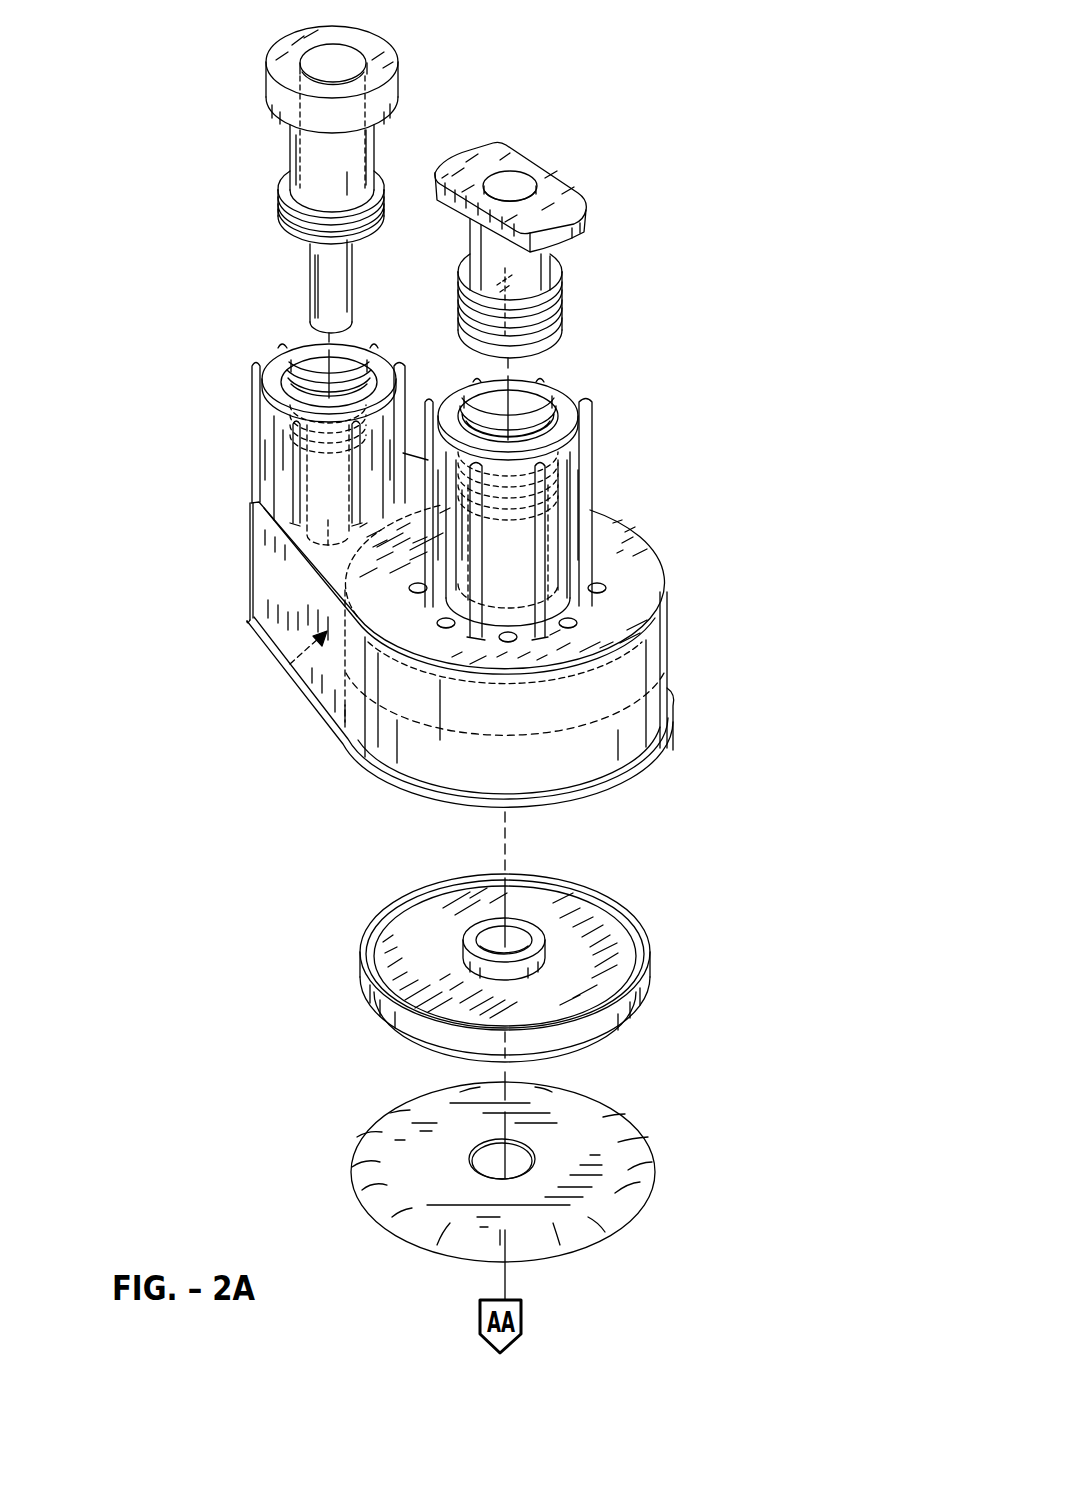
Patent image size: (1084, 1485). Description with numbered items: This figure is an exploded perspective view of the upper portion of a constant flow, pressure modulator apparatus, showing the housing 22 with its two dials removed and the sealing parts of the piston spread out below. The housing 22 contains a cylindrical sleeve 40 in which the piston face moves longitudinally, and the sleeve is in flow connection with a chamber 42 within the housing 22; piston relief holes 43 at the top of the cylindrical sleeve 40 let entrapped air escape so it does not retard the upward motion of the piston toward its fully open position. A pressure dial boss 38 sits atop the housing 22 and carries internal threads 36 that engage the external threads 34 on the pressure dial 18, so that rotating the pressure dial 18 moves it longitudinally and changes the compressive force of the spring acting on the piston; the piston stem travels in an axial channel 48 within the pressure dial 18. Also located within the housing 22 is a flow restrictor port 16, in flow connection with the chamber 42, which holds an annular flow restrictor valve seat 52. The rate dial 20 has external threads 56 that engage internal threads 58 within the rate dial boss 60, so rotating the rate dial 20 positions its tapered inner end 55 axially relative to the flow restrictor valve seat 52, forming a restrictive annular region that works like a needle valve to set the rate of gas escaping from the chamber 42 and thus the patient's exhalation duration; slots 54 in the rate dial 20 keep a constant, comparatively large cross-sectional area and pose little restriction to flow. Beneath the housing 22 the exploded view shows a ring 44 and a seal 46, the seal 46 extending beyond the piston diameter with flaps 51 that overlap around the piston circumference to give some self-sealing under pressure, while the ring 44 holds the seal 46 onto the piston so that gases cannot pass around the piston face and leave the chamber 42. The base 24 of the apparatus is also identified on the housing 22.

The flow restrictor port 16 is at (312, 572).
The pressure dial 18 is at (567, 192).
The rate dial 20 is at (276, 50).
The housing 22 is at (603, 767).
The base 24 is at (343, 740).
The external threads 34 is at (553, 323).
The internal threads 36 is at (538, 420).
The pressure dial boss 38 is at (564, 494).
The cylindrical sleeve 40 is at (673, 706).
The chamber 42 is at (292, 664).
The piston relief holes 43 is at (580, 622).
The ring 44 is at (617, 943).
The seal 46 is at (600, 1138).
The axial channel 48 is at (556, 264).
The flaps 51 is at (577, 1232).
The flow restrictor valve seat 52 is at (307, 495).
The slots 54 is at (347, 290).
The tapered inner end 55 is at (338, 310).
The external threads 56 is at (281, 213).
The internal threads 58 is at (300, 393).
The rate dial boss 60 is at (272, 445).